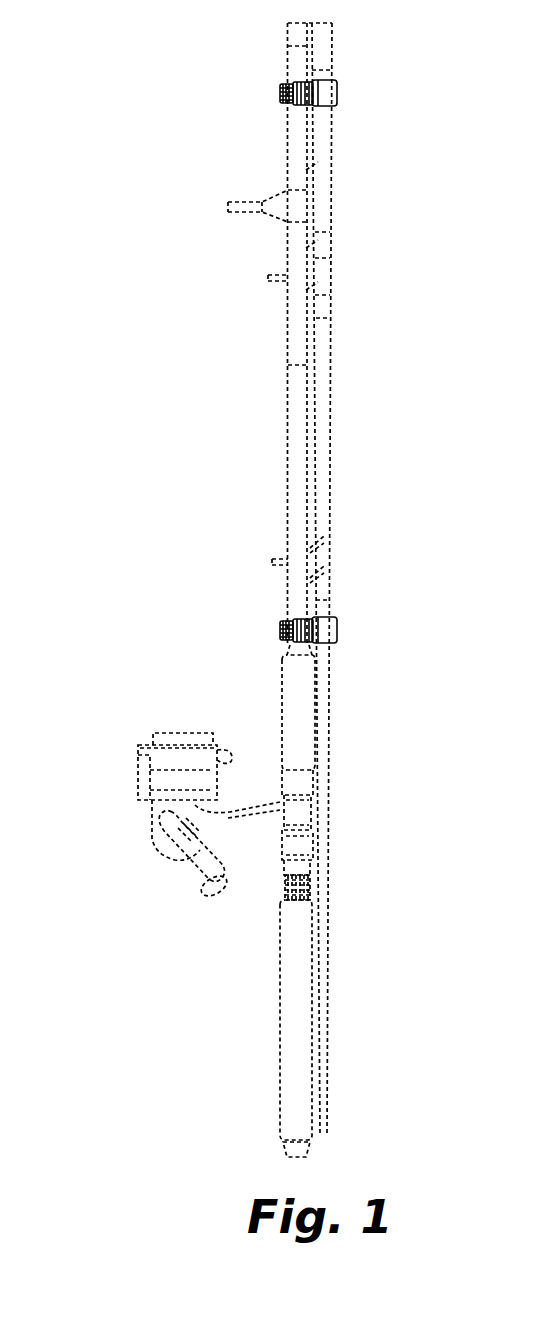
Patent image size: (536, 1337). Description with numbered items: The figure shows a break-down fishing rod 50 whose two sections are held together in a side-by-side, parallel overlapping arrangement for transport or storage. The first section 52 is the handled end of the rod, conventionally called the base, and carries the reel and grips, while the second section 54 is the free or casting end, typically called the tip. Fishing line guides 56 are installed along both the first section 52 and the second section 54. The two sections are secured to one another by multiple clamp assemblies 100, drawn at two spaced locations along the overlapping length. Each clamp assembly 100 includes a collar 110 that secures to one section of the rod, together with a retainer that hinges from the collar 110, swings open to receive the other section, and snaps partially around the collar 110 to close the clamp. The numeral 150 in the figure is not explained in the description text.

The break-down fishing rod 50 is at (152, 150).
The first section 52 is at (287, 432).
The second section 54 is at (330, 425).
The fishing line guides 56 is at (250, 207).
The clamp assembly 100 is at (238, 85).
The collar 110 is at (280, 95).
The clamp body 150 is at (337, 95).